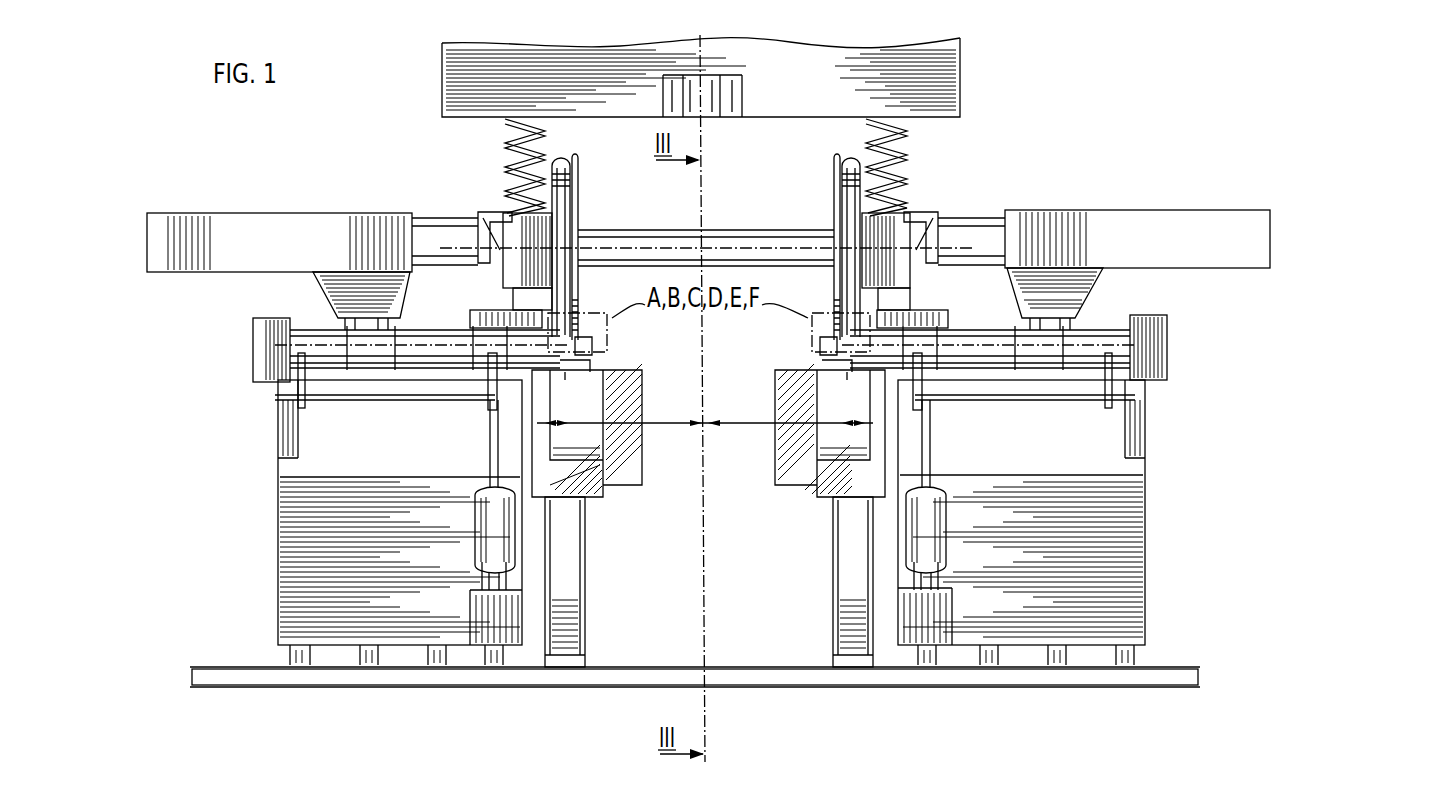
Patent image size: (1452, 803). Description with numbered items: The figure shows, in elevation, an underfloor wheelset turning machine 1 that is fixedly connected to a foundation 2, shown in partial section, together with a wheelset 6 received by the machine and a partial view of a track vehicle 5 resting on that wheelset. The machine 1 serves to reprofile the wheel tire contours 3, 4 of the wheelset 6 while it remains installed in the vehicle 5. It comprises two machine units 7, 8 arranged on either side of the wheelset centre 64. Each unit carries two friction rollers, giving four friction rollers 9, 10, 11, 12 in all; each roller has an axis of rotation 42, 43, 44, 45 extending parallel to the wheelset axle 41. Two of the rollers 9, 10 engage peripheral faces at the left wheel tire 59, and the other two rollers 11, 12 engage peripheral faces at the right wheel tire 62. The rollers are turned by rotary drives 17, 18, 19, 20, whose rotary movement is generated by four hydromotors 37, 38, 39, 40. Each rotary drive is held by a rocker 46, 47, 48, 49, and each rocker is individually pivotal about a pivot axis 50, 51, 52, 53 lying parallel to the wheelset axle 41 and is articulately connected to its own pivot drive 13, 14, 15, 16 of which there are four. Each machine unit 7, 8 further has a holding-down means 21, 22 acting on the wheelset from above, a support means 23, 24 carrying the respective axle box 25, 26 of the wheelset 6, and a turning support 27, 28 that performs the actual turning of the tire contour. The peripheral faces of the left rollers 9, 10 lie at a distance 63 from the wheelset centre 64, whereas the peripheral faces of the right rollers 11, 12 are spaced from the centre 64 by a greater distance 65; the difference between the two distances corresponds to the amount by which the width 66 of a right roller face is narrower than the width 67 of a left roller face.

The underfloor wheelset turning machine 1 is at (1065, 212).
The foundation 2 is at (1150, 685).
The wheel tire contour 3 is at (560, 160).
The wheel tire contour 4 is at (842, 160).
The track vehicle 5 is at (960, 78).
The wheelset 6 is at (740, 232).
The machine unit 7 is at (278, 545).
The machine unit 8 is at (1147, 545).
The friction roller 9 is at (626, 354).
The friction roller 10 is at (588, 372).
The friction roller 11 is at (787, 353).
The friction roller 12 is at (818, 360).
The pivot drive 13 is at (454, 495).
The pivot drive 14 is at (478, 540).
The pivot drive 15 is at (973, 495).
The pivot drive 16 is at (950, 540).
The rotary drive 17 is at (227, 350).
The rotary drive 18 is at (253, 336).
The rotary drive 19 is at (1191, 347).
The rotary drive 20 is at (1167, 335).
The holding-down means 21 is at (486, 212).
The holding-down means 22 is at (912, 212).
The support means 23 is at (512, 298).
The support means 24 is at (912, 298).
The axle box 25 is at (506, 283).
The axle box 26 is at (908, 283).
The turning support 27 is at (605, 390).
The turning support 28 is at (777, 390).
The hydromotor 37 is at (366, 368).
The hydromotor 38 is at (255, 365).
The hydromotor 39 is at (1052, 367).
The hydromotor 40 is at (1167, 365).
The wheelset axle 41 is at (655, 252).
The axis of rotation 42 is at (401, 325).
The axis of rotation 43 is at (308, 334).
The axis of rotation 44 is at (1016, 323).
The axis of rotation 45 is at (1085, 338).
The rocker 46 is at (397, 409).
The rocker 47 is at (301, 410).
The rocker 48 is at (1012, 409).
The rocker 49 is at (1108, 410).
The pivot axis 50 is at (385, 426).
The pivot axis 51 is at (472, 402).
The pivot axis 52 is at (1025, 425).
The pivot axis 53 is at (945, 402).
The left wheel tire 59 is at (578, 184).
The right wheel tire 62 is at (834, 184).
The distance 63 is at (656, 427).
The wheelset centre 64 is at (712, 542).
The distance 65 is at (736, 427).
The width 66 is at (857, 458).
The width 67 is at (557, 458).